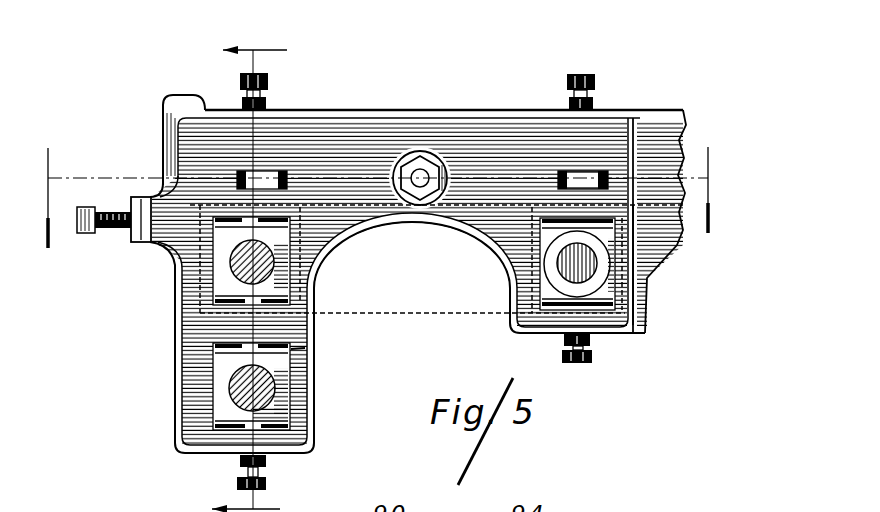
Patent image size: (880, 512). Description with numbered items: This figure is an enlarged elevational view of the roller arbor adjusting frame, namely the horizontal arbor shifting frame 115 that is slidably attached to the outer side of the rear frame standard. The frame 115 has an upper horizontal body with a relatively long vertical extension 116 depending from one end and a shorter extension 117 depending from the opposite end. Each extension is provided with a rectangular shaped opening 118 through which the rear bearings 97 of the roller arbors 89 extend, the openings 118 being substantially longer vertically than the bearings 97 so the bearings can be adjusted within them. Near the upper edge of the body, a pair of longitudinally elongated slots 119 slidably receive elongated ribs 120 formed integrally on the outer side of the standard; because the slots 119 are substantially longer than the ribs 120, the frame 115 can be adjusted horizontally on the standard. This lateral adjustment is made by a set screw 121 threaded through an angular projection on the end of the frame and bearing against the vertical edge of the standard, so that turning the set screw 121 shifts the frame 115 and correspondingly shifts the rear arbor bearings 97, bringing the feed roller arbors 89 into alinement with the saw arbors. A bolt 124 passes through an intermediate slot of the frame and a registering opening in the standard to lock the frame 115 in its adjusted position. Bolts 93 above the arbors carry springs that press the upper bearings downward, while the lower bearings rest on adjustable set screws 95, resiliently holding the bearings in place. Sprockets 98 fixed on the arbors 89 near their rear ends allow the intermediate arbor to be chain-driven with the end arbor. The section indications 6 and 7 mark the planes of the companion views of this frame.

The section line 6- 6 is at (382, 180).
The section line 7- 7 is at (258, 277).
The roller arbor 89 is at (572, 258).
The bolt 93 is at (269, 83).
The adjustable set screw 95 is at (235, 482).
The bearing 97 is at (227, 283).
The sprocket 98 is at (320, 237).
The arbor shifting frame 115 is at (522, 93).
The vertical extension 116 is at (200, 365).
The shorter extension 117 is at (618, 281).
The rectangular shaped opening 118 is at (291, 349).
The longitudinally elongated slot 119 is at (608, 174).
The elongated rib 120 is at (578, 173).
The set screw 121 is at (105, 231).
The bolt 124 is at (419, 168).